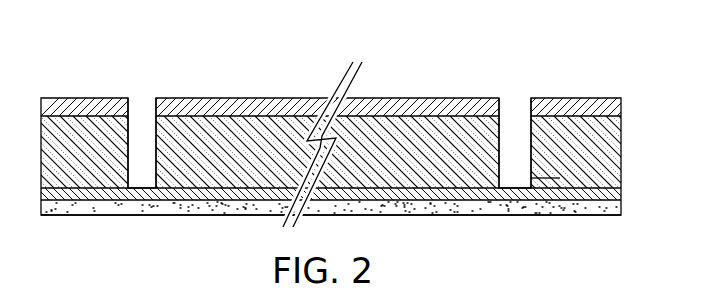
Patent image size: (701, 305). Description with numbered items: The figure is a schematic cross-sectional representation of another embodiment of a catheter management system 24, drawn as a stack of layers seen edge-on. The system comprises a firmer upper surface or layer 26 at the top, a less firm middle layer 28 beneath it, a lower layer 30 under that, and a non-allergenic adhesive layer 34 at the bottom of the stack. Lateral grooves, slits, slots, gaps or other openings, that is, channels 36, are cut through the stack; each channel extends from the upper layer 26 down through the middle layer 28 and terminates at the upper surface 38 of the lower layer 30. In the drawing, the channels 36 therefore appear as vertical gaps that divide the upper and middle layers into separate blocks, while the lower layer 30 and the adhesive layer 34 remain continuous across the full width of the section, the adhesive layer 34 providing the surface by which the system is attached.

The catheter management system 24 is at (418, 72).
The firmer upper surface or layer 26 is at (622, 108).
The less firm middle layer 28 is at (604, 155).
The lower layer 30 is at (620, 197).
The non-allergenic adhesive layer 34 is at (621, 212).
The channels 36 is at (141, 110).
The upper surface of lower layer 38 is at (541, 177).